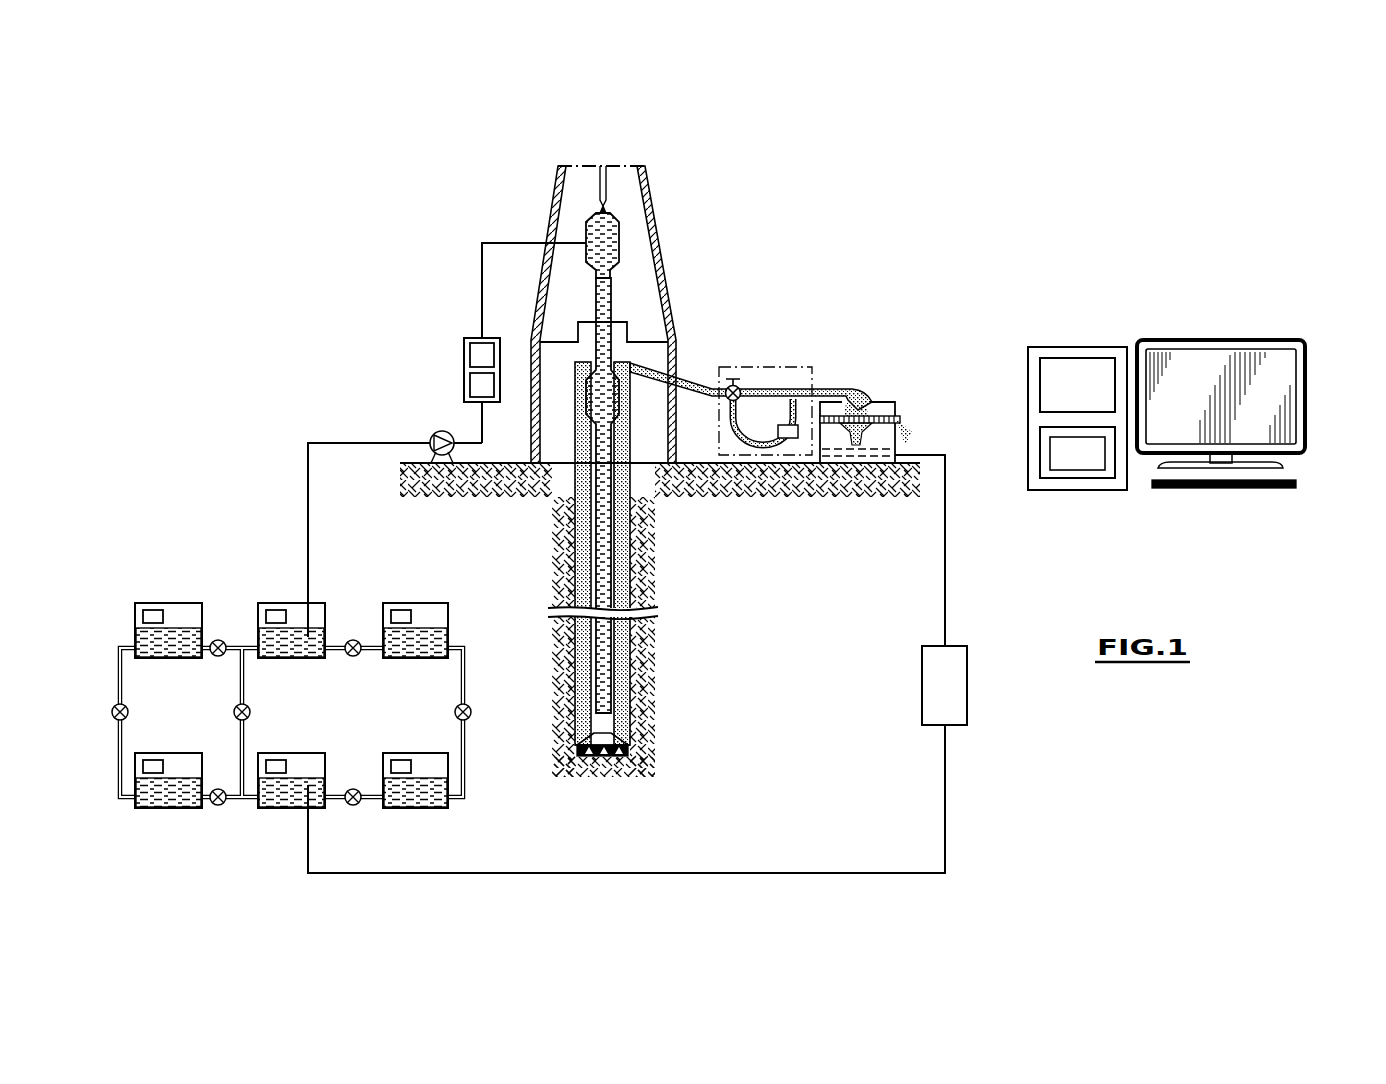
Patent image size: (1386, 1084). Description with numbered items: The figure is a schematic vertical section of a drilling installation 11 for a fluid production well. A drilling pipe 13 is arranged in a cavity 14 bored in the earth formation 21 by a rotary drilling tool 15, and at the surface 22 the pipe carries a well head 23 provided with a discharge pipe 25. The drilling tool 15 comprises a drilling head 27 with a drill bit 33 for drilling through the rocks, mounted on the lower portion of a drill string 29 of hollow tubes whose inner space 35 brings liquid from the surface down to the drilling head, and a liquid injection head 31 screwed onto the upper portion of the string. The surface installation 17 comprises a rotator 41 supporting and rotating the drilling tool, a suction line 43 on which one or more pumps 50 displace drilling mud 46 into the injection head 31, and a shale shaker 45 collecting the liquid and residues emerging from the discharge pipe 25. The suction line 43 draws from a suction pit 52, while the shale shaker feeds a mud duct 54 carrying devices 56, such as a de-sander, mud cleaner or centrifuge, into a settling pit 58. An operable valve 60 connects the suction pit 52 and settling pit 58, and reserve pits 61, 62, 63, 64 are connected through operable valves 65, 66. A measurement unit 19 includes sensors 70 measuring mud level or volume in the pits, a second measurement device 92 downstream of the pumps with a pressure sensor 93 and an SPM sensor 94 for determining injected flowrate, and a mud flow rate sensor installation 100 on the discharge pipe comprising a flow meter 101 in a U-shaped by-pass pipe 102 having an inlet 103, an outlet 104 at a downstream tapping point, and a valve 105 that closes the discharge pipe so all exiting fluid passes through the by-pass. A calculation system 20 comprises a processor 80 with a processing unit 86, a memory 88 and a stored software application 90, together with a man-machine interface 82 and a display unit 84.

The drilling installation 11 is at (724, 212).
The drilling pipe 13 is at (577, 680).
The cavity 14 is at (575, 735).
The rotary drilling tool 15 is at (577, 560).
The surface installation 17 is at (810, 268).
The measurement unit 19 is at (368, 310).
The calculation system 20 is at (1221, 333).
The earth formation 21 is at (646, 637).
The surface 22 is at (518, 462).
The well head 23 is at (646, 360).
The discharge pipe 25 is at (657, 385).
The drilling head 27 is at (609, 757).
The drill string 29 is at (616, 548).
The liquid injection head 31 is at (621, 239).
The drill bit 33 is at (593, 757).
The inner space 35 is at (632, 662).
The rotator 41 is at (566, 325).
The suction line 43 is at (322, 442).
The shale shaker 45 is at (870, 390).
The drilling mud 46 is at (428, 635).
The pump 50 is at (430, 440).
The suction pit 52 is at (292, 658).
The mud duct 54 is at (944, 598).
The device 56 is at (932, 685).
The settling pit 58 is at (268, 808).
The operable valve 60 is at (234, 712).
The reserve pit 61 is at (408, 808).
The reserve pit 62 is at (415, 658).
The reserve pit 63 is at (155, 658).
The reserve pit 64 is at (165, 808).
The operable valve 65 is at (353, 639).
The operable valve 66 is at (218, 639).
The sensor 70 is at (152, 608).
The processor 80 is at (1026, 470).
The man-machine interface 82 is at (1306, 484).
The display unit 84 is at (1312, 349).
The processing unit 86 is at (1038, 383).
The memory 88 is at (1038, 438).
The software application 90 is at (1077, 453).
The second measurement device 92 is at (460, 318).
The pressure sensor 93 is at (470, 348).
The SPM sensor 94 is at (470, 390).
The mud flow rate sensor installation 100 is at (802, 360).
The flow meter 101 is at (790, 440).
The by-pass pipe 102 is at (757, 455).
The inlet 103 is at (733, 383).
The outlet 104 is at (795, 394).
The valve 105 is at (742, 395).